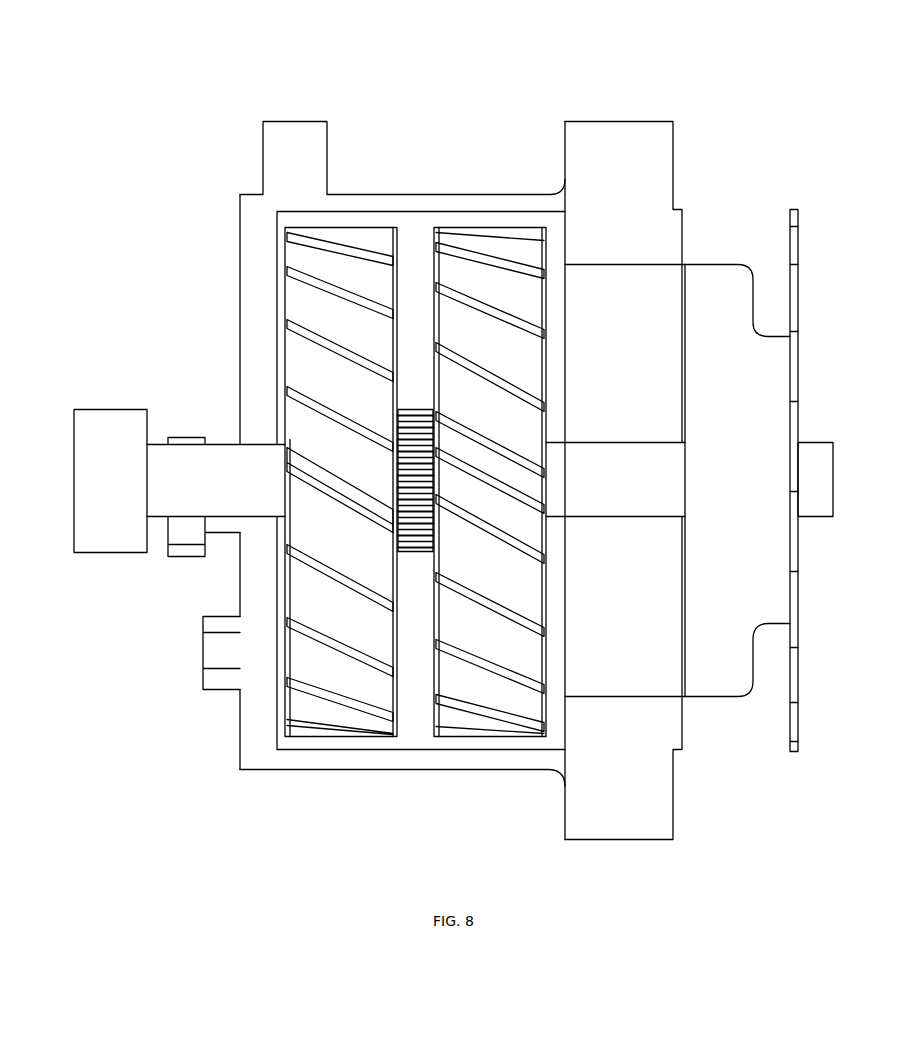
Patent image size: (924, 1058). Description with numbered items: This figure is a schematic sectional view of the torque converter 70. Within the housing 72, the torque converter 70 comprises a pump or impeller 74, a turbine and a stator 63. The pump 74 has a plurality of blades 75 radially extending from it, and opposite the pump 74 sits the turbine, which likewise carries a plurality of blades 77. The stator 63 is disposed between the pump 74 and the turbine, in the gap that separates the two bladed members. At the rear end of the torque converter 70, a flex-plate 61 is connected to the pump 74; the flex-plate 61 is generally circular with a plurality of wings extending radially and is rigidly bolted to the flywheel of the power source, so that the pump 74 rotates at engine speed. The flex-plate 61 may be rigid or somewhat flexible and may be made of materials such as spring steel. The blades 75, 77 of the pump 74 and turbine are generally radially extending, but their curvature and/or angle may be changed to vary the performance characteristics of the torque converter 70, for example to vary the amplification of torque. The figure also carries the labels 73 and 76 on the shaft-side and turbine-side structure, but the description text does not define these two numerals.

The torque converter 70 is at (822, 98).
The housing 72 is at (627, 121).
The drive shaft 73 is at (218, 452).
The pump 74 is at (481, 222).
The blades 75 is at (500, 283).
The first rotor 76 is at (348, 228).
The blades 77 is at (349, 246).
The stator 63 is at (411, 408).
The flex-plate 61 is at (799, 212).